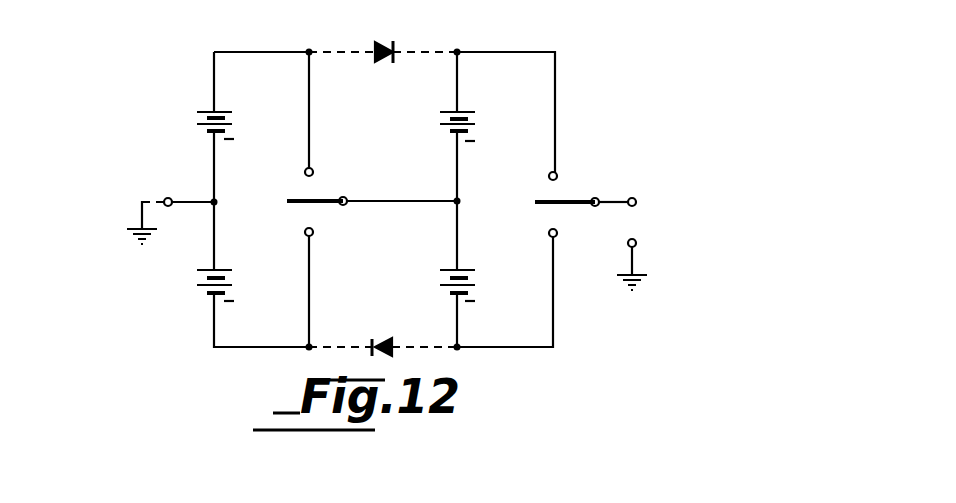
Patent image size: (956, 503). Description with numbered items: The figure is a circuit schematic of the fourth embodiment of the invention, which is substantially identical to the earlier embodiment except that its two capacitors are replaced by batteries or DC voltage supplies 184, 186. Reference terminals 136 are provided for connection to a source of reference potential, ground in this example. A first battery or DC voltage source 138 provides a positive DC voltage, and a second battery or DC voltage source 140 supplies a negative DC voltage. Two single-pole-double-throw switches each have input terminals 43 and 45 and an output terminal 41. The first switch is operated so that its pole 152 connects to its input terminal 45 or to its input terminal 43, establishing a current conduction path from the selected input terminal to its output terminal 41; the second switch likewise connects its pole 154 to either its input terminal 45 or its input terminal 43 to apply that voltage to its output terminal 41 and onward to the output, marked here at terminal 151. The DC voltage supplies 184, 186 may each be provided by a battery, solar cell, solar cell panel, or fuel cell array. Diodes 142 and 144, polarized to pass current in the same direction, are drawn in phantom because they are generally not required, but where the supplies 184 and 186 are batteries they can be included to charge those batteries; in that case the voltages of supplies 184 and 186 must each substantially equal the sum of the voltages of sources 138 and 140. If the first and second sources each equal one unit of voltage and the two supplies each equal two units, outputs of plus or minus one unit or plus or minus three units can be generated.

The output terminal 41 is at (346, 197).
The input terminal 43 is at (313, 234).
The input terminal 45 is at (312, 168).
The reference terminal 136 is at (168, 197).
The first battery or DC voltage source 138 is at (200, 115).
The second battery or DC voltage source 140 is at (200, 280).
The diode 142 is at (393, 48).
The diode 144 is at (372, 340).
The output terminal 151 is at (636, 198).
The pole 152 is at (293, 199).
The pole 154 is at (547, 200).
The battery or DC voltage supply 184 is at (443, 118).
The battery or DC voltage supply 186 is at (443, 278).